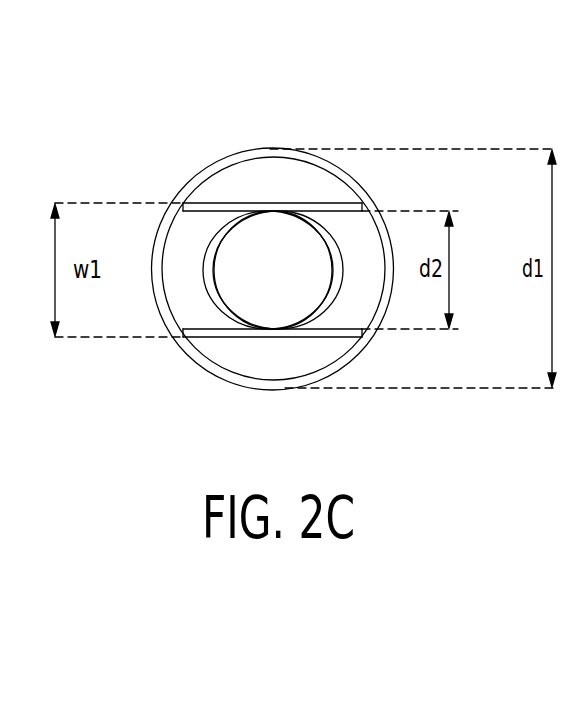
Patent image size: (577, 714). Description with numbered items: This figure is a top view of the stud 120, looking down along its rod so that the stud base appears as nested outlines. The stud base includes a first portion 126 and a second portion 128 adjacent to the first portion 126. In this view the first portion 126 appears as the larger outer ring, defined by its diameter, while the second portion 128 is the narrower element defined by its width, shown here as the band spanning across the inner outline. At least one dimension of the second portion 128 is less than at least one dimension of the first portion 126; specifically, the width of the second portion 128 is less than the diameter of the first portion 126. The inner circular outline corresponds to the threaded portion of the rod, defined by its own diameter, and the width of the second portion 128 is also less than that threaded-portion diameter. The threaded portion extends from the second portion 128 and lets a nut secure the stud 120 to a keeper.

The stud 120 is at (533, 38).
The first portion 126 is at (243, 185).
The second portion 128 is at (193, 300).